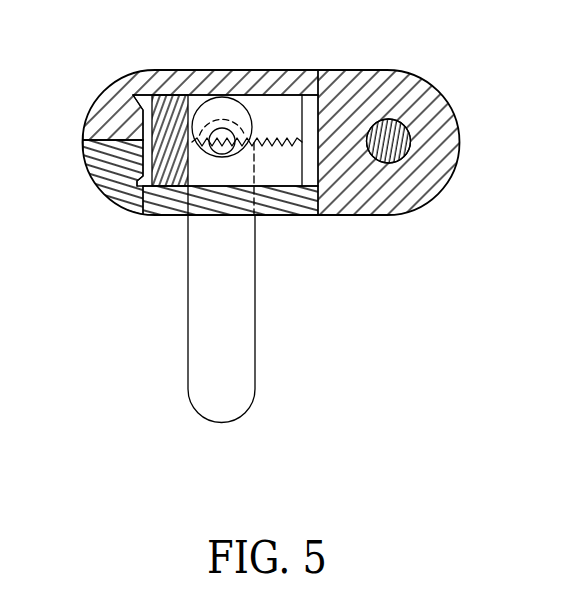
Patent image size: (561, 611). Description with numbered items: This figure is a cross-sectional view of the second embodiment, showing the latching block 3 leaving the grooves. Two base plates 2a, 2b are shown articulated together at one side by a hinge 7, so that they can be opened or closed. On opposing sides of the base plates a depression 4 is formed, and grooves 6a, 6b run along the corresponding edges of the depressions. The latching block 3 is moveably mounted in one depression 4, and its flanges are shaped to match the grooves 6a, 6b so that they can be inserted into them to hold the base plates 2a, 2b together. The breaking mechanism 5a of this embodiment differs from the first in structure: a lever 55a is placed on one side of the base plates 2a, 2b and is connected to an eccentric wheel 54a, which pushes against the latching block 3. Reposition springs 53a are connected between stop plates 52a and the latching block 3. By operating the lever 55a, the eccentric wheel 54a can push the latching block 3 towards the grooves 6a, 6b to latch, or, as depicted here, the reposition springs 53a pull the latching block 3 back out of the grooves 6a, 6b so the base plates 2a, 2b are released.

The base plate 2a is at (110, 100).
The base plate 2b is at (117, 177).
The latching block 3 is at (178, 98).
The depression 4 is at (270, 110).
The breaking mechanism 5a is at (233, 216).
The groove 6a is at (128, 105).
The groove 6b is at (143, 187).
The hinge 7 is at (442, 132).
The stop plate 52a is at (308, 108).
The reposition spring 53a is at (276, 146).
The eccentric wheel 54a is at (218, 112).
The lever 55a is at (238, 327).